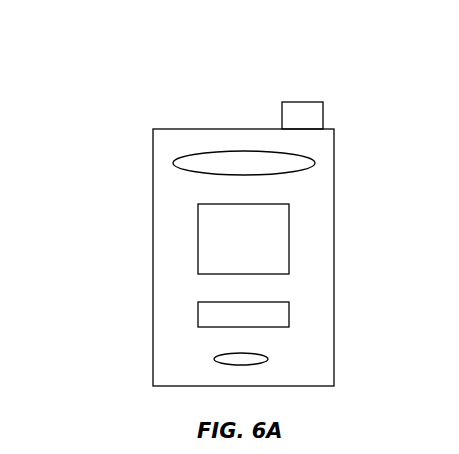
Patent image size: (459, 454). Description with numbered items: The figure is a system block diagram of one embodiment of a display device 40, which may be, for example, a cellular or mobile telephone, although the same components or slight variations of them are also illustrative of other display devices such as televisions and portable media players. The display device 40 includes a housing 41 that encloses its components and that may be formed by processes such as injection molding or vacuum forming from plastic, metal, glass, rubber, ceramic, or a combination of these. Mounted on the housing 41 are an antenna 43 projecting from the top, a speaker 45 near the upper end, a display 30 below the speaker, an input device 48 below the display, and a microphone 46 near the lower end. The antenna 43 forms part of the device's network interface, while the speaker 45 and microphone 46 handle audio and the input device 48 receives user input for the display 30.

The display device 40 is at (112, 58).
The housing 41 is at (175, 129).
The antenna 43 is at (308, 102).
The speaker 45 is at (300, 167).
The display 30 is at (289, 231).
The input device 48 is at (289, 313).
The microphone 46 is at (268, 358).